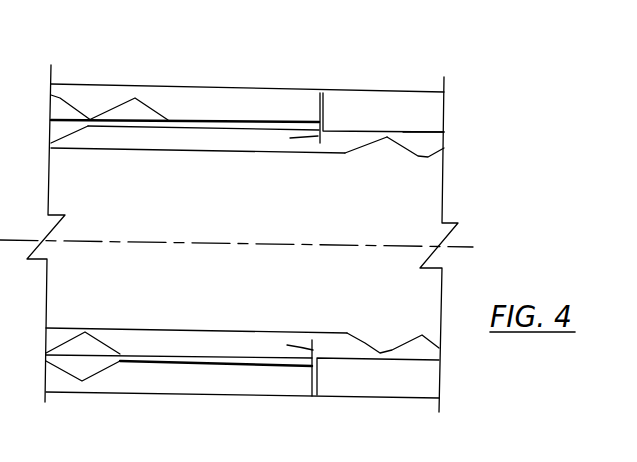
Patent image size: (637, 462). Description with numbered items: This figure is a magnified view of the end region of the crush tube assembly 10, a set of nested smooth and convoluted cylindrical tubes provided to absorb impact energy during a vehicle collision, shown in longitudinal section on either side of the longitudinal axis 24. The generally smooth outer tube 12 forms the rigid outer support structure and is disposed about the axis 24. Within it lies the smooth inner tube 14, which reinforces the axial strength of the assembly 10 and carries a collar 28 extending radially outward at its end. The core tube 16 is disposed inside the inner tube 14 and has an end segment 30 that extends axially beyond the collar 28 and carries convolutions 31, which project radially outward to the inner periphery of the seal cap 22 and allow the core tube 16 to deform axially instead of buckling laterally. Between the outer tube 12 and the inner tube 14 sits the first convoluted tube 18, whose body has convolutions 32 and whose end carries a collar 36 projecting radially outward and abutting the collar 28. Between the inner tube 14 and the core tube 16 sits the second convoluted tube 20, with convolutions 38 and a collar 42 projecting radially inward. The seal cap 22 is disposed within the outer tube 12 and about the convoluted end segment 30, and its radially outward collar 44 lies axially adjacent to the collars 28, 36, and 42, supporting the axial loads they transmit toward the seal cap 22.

The crush tube assembly 10 is at (362, 76).
The outer tube 12 is at (390, 89).
The inner tube 14 is at (68, 119).
The core tube 16 is at (90, 148).
The first convoluted tube 18 is at (158, 111).
The second convoluted tube 20 is at (190, 127).
The seal cap 22 is at (403, 132).
The longitudinal axis 24 is at (210, 240).
The collar 28 is at (320, 93).
The end segment 30 is at (344, 157).
The convolutions 31 is at (387, 140).
The convolutions 32 is at (85, 332).
The collar 36 is at (318, 110).
The convolutions 38 is at (105, 375).
The collar 42 is at (288, 244).
The collar 44 is at (323, 120).